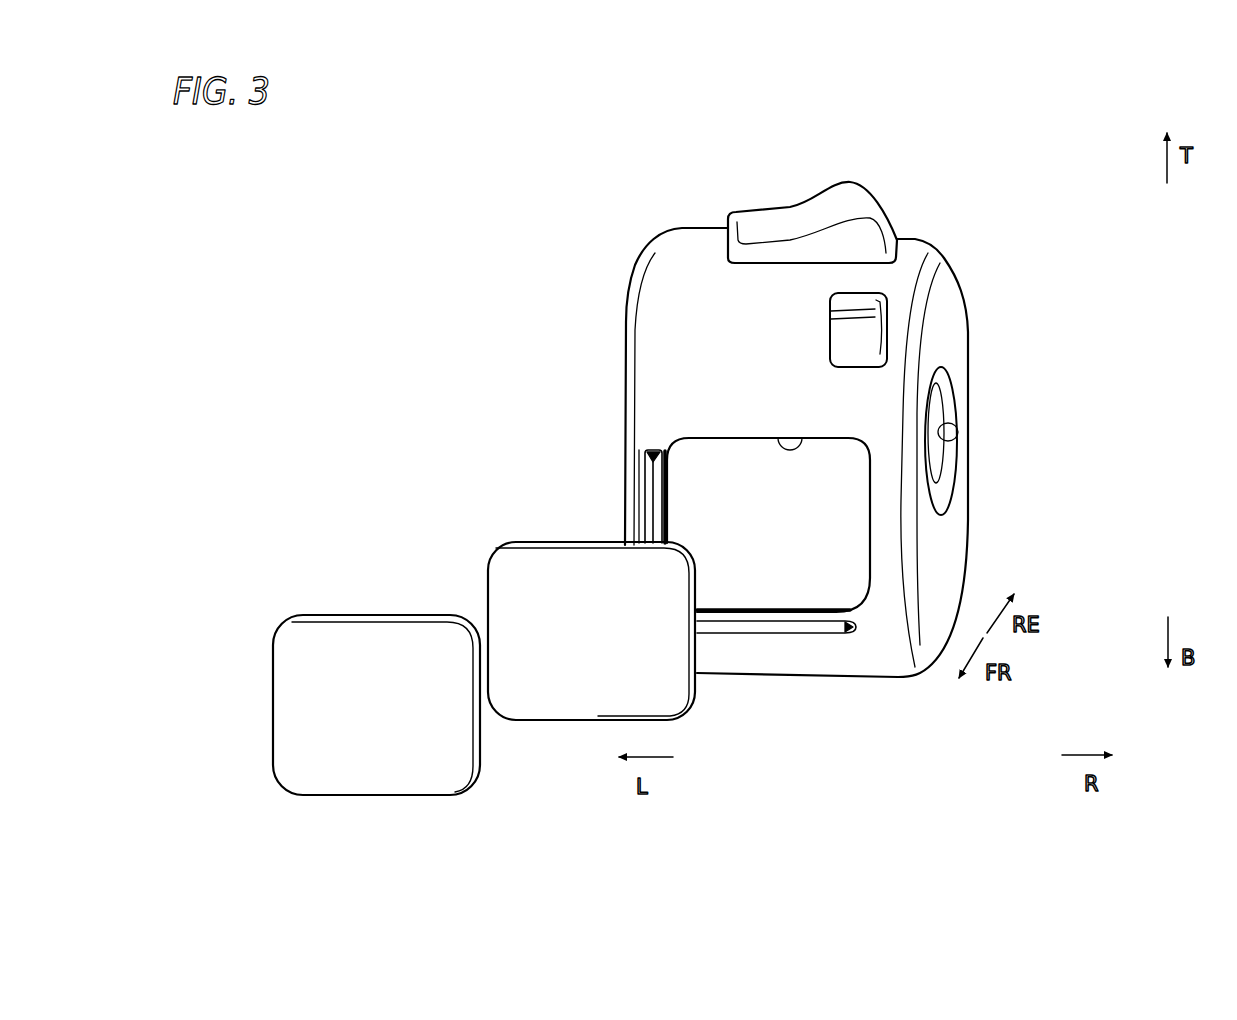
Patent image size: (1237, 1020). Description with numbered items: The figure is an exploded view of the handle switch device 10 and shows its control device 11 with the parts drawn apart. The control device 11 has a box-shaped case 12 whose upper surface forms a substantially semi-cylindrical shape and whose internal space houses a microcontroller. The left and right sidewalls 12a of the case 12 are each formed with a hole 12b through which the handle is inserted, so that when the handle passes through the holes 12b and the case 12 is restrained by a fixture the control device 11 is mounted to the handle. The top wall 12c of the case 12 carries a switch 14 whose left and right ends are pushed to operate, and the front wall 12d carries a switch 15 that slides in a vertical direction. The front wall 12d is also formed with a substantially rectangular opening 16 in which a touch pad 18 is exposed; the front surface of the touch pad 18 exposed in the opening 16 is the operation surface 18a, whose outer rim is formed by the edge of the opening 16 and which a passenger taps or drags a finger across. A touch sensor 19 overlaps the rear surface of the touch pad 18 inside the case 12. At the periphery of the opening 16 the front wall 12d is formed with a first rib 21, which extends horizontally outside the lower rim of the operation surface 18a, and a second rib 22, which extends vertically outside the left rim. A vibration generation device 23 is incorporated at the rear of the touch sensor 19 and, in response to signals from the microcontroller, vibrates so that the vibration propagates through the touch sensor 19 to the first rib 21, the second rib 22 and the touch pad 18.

The storage apparatus 10 is at (1043, 174).
The control device 11 is at (633, 226).
The case 12 is at (698, 224).
The sidewall 12a is at (627, 380).
The hole 12b is at (947, 433).
The top wall 12c is at (917, 238).
The front wall 12d is at (647, 435).
The switch 14 is at (862, 206).
The switch 15 is at (848, 346).
The opening 16 is at (779, 446).
The touch pad 18 is at (337, 617).
The operation surface 18a is at (455, 757).
The touch sensor 19 is at (510, 568).
The first rib 21 is at (800, 633).
The second rib 22 is at (648, 497).
The vibration generation device 23 is at (707, 448).